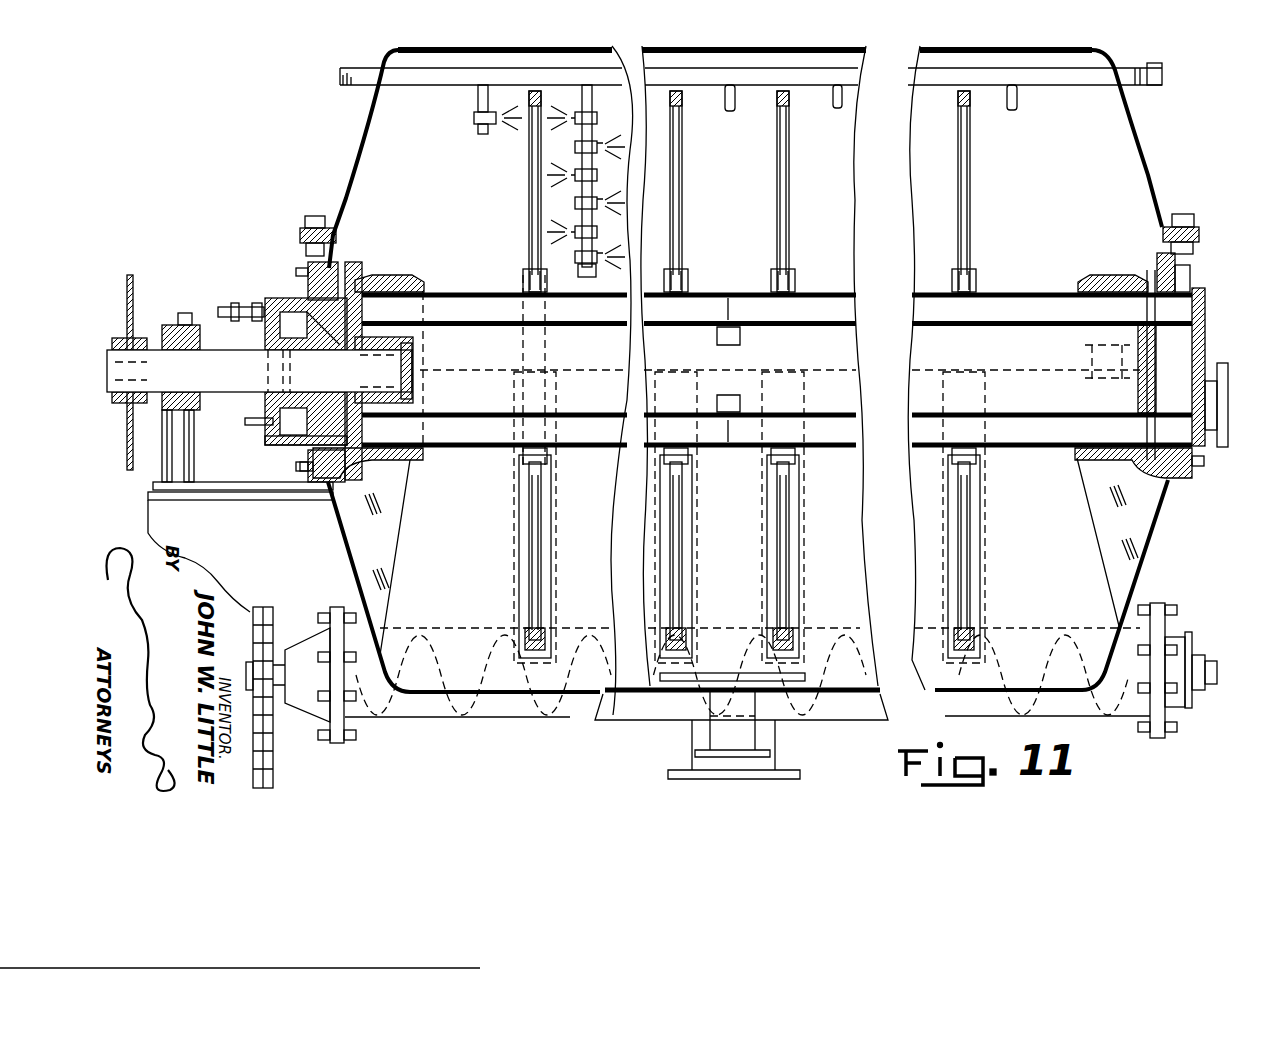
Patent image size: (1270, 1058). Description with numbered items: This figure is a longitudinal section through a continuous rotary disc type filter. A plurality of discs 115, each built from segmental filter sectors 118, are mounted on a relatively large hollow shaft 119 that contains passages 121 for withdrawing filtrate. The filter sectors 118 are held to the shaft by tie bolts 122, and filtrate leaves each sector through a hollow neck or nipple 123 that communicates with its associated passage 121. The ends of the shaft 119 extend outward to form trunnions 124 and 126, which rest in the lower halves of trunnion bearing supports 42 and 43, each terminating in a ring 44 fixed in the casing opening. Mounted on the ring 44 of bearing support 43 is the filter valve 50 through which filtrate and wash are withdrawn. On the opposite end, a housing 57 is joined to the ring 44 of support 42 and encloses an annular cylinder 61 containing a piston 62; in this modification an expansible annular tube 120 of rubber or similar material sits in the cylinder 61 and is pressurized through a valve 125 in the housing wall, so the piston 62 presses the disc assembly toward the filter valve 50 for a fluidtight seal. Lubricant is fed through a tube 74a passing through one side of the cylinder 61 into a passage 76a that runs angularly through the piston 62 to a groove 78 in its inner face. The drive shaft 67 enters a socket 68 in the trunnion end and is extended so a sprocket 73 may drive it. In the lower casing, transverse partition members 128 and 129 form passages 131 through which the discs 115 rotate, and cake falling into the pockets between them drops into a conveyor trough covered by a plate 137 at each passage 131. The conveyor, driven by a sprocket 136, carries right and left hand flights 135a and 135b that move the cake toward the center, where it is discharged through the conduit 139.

The trunnion bearing support 42 is at (398, 456).
The trunnion bearing support 43 is at (1148, 453).
The ring 44 is at (330, 298).
The filter valve 50 is at (1203, 353).
The housing 57 is at (268, 297).
The annular cylinder 61 is at (287, 425).
The piston 62 is at (308, 447).
The drive shaft 67 is at (247, 381).
The socket 68 is at (413, 345).
The sprocket 73 is at (133, 305).
The tube 74a is at (244, 308).
The passage 76a is at (310, 318).
The groove 78 is at (362, 430).
The disc 115 is at (683, 233).
The filter sector 118 is at (529, 183).
The shaft 119 is at (698, 293).
The expansible annular tube 120 is at (300, 443).
The passage 121 is at (1017, 305).
The tie bolt 122 is at (790, 90).
The nipple 123 is at (785, 291).
The trunnion 124 is at (445, 292).
The valve 125 is at (257, 413).
The trunnion 126 is at (998, 292).
The transverse partition member 128 is at (518, 485).
The transverse partition member 129 is at (548, 498).
The passage 131 is at (522, 527).
The right hand flight 135a is at (488, 640).
The left hand flight 135b is at (1000, 650).
The sprocket 136 is at (276, 627).
The plate 137 is at (548, 627).
The conduit 139 is at (698, 732).